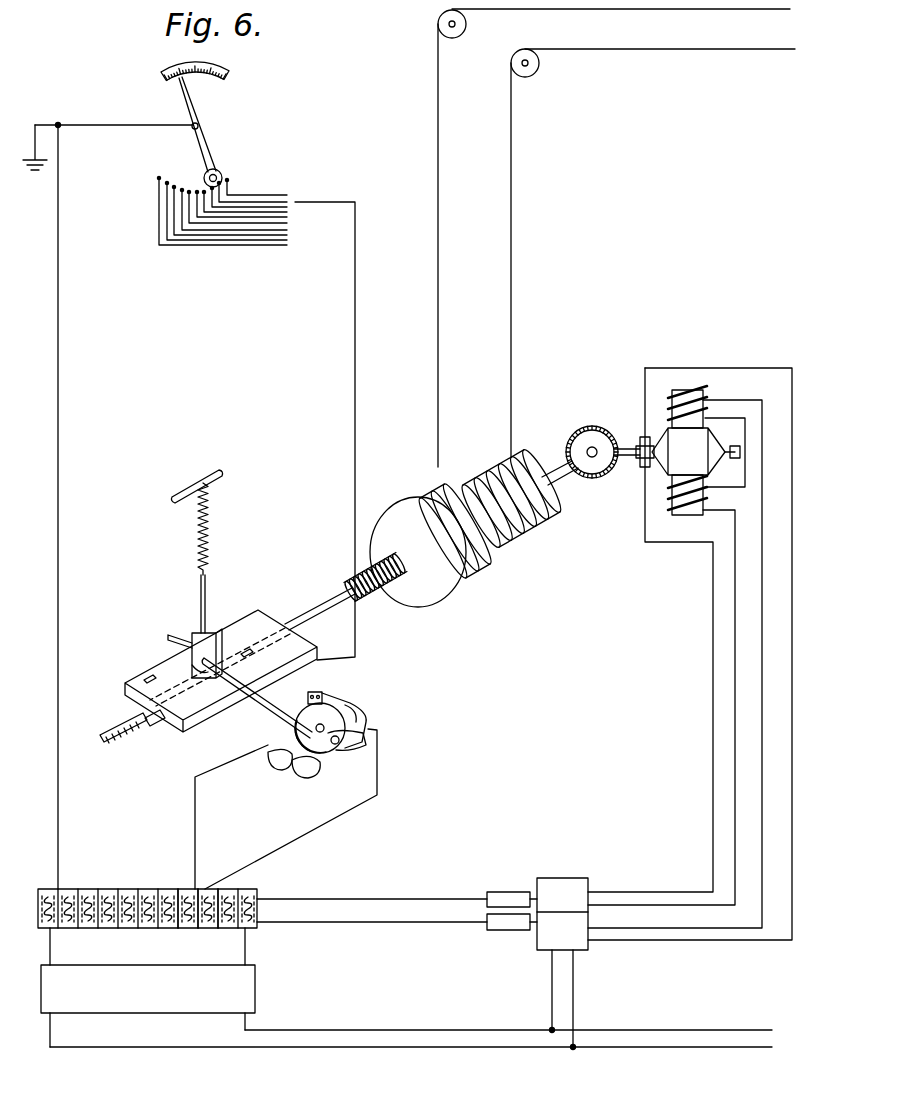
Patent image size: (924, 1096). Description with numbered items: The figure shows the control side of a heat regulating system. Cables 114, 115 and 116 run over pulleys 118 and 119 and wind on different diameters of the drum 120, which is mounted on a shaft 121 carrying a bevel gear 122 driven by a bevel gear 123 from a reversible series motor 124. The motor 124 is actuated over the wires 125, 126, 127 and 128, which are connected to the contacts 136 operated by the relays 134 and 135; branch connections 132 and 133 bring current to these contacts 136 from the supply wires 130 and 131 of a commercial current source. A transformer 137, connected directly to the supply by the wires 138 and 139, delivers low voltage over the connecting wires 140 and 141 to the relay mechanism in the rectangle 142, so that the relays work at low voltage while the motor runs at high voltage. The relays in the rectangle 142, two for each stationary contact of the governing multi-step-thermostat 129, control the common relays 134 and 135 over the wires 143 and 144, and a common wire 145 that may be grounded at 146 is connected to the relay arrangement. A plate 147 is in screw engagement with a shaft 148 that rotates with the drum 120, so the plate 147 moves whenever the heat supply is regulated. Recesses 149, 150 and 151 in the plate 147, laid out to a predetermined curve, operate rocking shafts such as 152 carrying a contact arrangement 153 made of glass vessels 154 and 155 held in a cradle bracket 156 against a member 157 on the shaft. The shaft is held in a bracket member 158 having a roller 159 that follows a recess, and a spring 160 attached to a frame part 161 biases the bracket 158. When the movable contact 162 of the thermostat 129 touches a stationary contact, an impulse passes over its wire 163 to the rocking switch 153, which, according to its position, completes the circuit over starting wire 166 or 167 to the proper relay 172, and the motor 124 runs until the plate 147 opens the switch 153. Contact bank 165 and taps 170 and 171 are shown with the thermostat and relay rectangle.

The cable 114 is at (618, 10).
The cable 115 is at (511, 320).
The cable 116 is at (720, 49).
The pulley 118 is at (438, 22).
The pulley 119 is at (538, 75).
The drum 120 is at (508, 548).
The shaft 121 is at (572, 440).
The bevel gear 122 is at (603, 418).
The bevel gear 123 is at (617, 473).
The series motor 124 is at (663, 440).
The wire 125 is at (713, 595).
The wire 126 is at (735, 637).
The wire 127 is at (762, 663).
The wire 128 is at (790, 690).
The multi-step-thermostat 129 is at (232, 117).
The supply wire 130 is at (695, 1030).
The supply wire 131 is at (723, 1047).
The branch connection 132 is at (553, 990).
The branch connection 133 is at (573, 1010).
The relay 134 is at (505, 893).
The relay 135 is at (503, 931).
The contacts 136 is at (575, 883).
The transformer 137 is at (243, 987).
The wire 138 is at (368, 1030).
The wire 139 is at (358, 1048).
The connecting wire 140 is at (50, 948).
The connecting wire 141 is at (247, 950).
The relay mechanism rectangle 142 is at (108, 889).
The wire 143 is at (358, 899).
The wire 144 is at (385, 923).
The common wire 145 is at (58, 535).
The ground 146 is at (35, 145).
The plate 147 is at (275, 615).
The shaft 148 is at (318, 600).
The recess 149 is at (147, 682).
The recess 150 is at (203, 680).
The recess 151 is at (246, 650).
The rocking shaft 152 is at (185, 640).
The contact arrangement 153 is at (320, 780).
The glass vessel 154 is at (282, 765).
The glass vessel 155 is at (368, 728).
The bracket arrangement 156 is at (340, 757).
The member 157 is at (327, 715).
The bracket member 158 is at (212, 625).
The roller 159 is at (185, 665).
The spring 160 is at (213, 527).
The frame part 161 is at (217, 468).
The movable contact 162 is at (222, 170).
The wire 163 is at (355, 370).
The contact bank 165 is at (233, 192).
The starting wire 166 is at (197, 815).
The starting wire 167 is at (346, 812).
The resistance tap 170 is at (183, 928).
The resistance tap 171 is at (222, 892).
The relay 172 is at (202, 927).